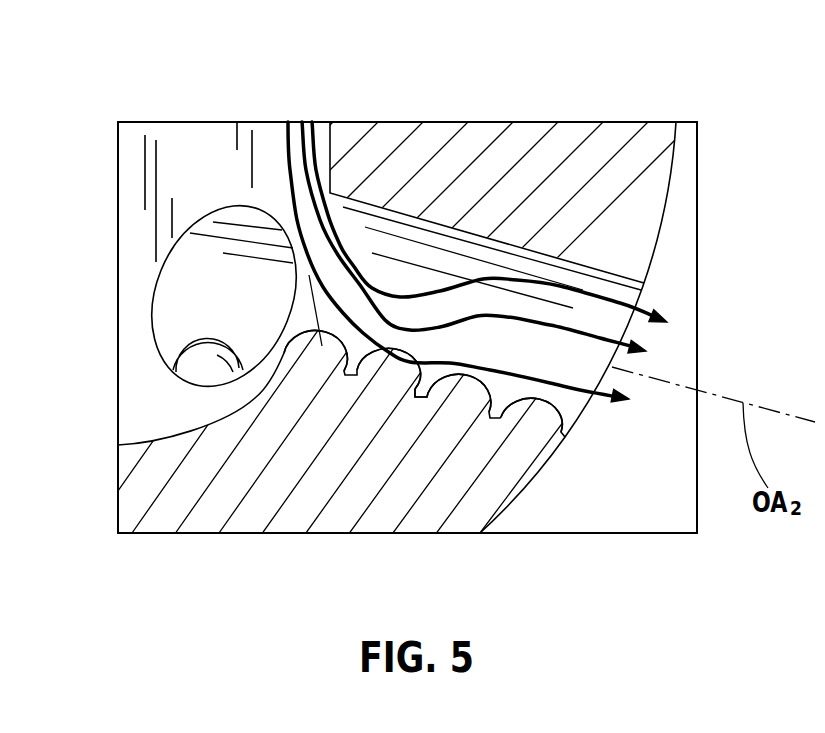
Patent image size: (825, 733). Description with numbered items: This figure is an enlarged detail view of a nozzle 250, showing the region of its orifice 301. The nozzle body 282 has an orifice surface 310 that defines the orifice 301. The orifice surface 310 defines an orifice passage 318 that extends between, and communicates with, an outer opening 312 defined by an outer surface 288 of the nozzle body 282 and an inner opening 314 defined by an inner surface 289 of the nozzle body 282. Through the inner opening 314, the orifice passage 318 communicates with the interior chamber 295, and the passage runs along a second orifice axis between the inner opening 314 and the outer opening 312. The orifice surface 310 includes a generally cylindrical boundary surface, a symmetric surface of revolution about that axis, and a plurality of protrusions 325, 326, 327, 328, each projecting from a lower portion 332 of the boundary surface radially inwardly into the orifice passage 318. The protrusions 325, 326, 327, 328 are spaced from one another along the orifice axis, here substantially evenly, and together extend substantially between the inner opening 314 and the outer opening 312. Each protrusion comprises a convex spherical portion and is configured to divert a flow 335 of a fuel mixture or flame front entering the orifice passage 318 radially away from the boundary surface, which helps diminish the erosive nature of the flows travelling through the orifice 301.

The pump assembly 250 is at (178, 110).
The nozzle body 282 is at (527, 175).
The outer surface 288 is at (668, 226).
The inner surface 289 is at (189, 429).
The interior chamber 295 is at (181, 178).
The orifice 301 is at (617, 321).
The orifice surface 310 is at (569, 361).
The outer opening 312 is at (653, 292).
The inner opening 314 is at (278, 312).
The orifice passage 318 is at (417, 250).
The protrusion 325 is at (322, 346).
The protrusion 326 is at (388, 361).
The protrusion 327 is at (462, 383).
The protrusion 328 is at (540, 405).
The lower portion 332 is at (420, 397).
The flow 335 is at (289, 200).